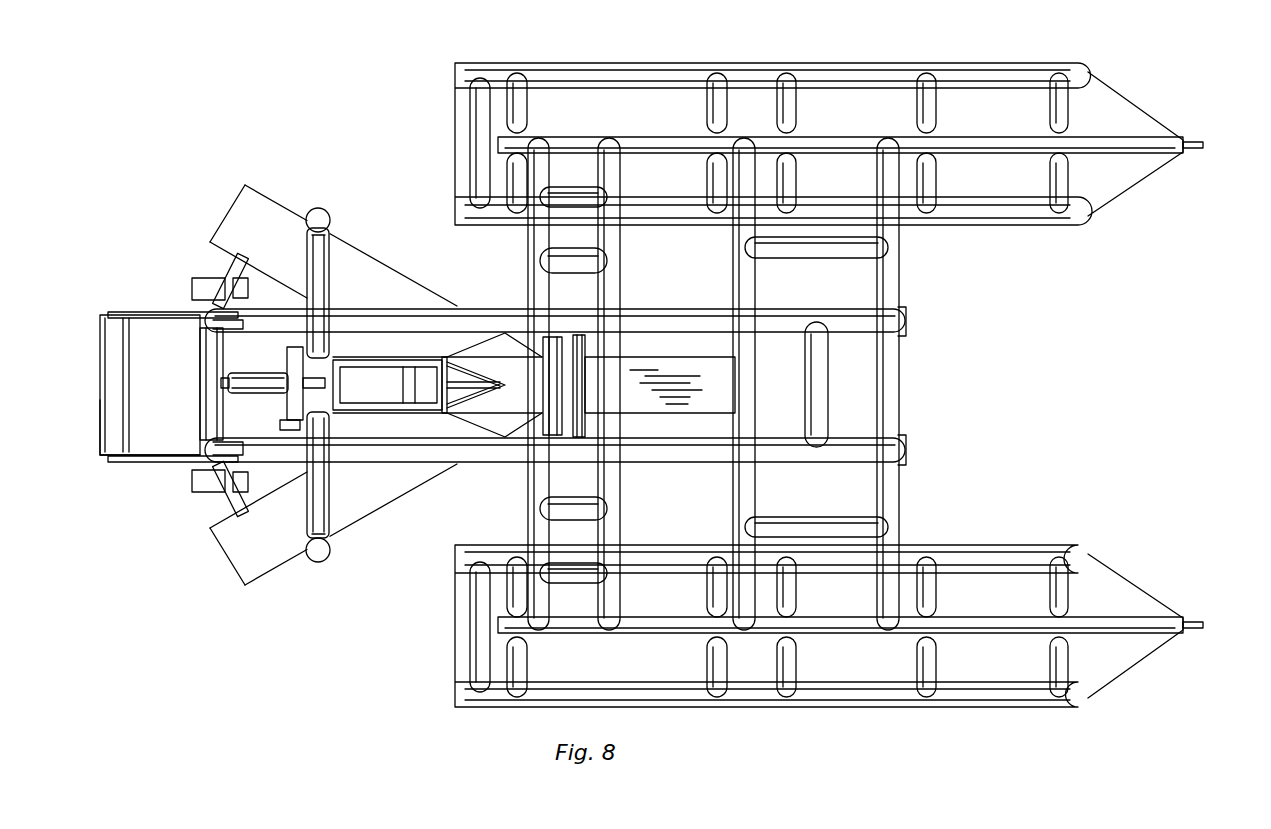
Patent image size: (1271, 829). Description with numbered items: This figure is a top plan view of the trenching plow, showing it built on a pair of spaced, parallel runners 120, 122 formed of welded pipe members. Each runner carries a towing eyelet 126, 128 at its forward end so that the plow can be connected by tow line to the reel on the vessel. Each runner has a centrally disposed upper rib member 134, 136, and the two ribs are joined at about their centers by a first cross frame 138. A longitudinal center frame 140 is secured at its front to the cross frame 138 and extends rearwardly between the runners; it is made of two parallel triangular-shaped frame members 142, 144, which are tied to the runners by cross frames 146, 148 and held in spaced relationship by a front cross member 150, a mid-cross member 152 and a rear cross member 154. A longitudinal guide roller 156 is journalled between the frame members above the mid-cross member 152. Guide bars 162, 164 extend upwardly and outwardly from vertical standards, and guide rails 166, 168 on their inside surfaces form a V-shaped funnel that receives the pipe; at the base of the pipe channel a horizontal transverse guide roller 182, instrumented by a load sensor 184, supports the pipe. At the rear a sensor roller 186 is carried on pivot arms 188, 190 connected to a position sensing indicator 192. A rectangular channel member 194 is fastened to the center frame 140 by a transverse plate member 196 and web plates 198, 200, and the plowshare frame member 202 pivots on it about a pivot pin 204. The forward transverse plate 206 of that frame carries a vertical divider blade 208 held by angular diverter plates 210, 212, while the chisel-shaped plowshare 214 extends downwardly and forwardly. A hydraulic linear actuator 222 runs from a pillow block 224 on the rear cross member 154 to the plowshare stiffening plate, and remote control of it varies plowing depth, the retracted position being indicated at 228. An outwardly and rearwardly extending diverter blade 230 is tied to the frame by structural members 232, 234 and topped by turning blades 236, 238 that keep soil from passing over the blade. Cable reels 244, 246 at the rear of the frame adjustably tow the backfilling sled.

The runner 120 is at (985, 708).
The runner 122 is at (822, 65).
The towing eyelet 126 is at (1193, 626).
The towing eyelet 128 is at (1193, 143).
The upper rib member 134 is at (1116, 617).
The upper rib member 136 is at (1130, 152).
The first cross frame 138 is at (901, 506).
The center frame 140 is at (505, 468).
The frame member 142 is at (680, 462).
The frame member 144 is at (702, 309).
The cross frame 146 is at (620, 532).
The cross frame 148 is at (528, 248).
The front cross member 150 is at (808, 352).
The mid-cross member 152 is at (582, 345).
The rear cross member 154 is at (200, 352).
The guide roller 156 is at (568, 386).
The guide bar 162 is at (321, 553).
The guide bar 164 is at (320, 208).
The guide rail 166 is at (331, 540).
The guide rail 168 is at (327, 243).
The horizontal transverse guide roller 182 is at (290, 398).
The load sensor 184 is at (292, 432).
The sensor roller 186 is at (130, 377).
The pivot arm 188 is at (143, 456).
The pivot arm 190 is at (140, 312).
The position sensing indicator 192 is at (210, 447).
The channel member 194 is at (385, 360).
The transverse plate member 196 is at (345, 357).
The web plate 198 is at (362, 414).
The web plate 200 is at (447, 357).
The plowshare frame member 202 is at (385, 404).
The pivot pin 204 is at (412, 365).
The transverse plate 206 is at (445, 420).
The divider blade 208 is at (490, 386).
The angular diverter plate 210 is at (474, 400).
The angular diverter plate 212 is at (462, 370).
The plowshare 214 is at (712, 386).
The hydraulic linear actuator 222 is at (245, 373).
The pillow block 224 is at (228, 393).
The retracted plow position 228 is at (275, 566).
The diverter blade 230 is at (292, 212).
The structural member 232 is at (232, 498).
The structural member 234 is at (232, 275).
The turning blade 236 is at (220, 545).
The turning blade 238 is at (232, 225).
The cable reel 244 is at (193, 484).
The cable reel 246 is at (193, 287).